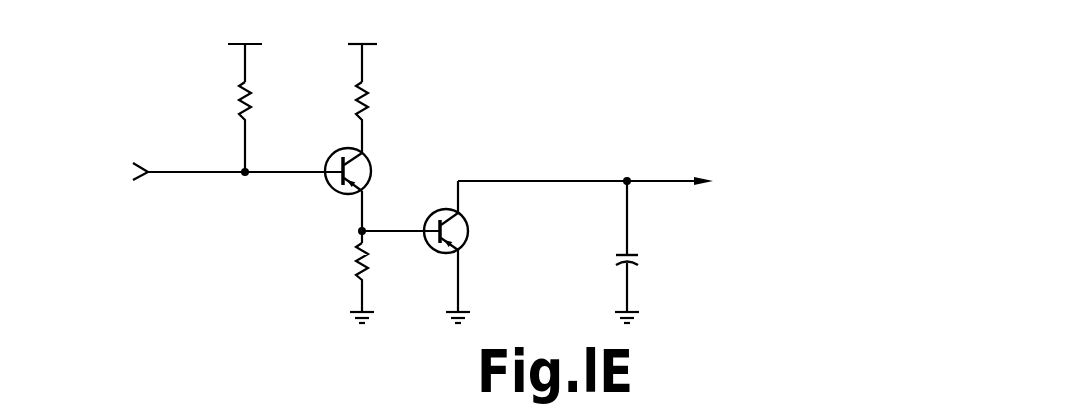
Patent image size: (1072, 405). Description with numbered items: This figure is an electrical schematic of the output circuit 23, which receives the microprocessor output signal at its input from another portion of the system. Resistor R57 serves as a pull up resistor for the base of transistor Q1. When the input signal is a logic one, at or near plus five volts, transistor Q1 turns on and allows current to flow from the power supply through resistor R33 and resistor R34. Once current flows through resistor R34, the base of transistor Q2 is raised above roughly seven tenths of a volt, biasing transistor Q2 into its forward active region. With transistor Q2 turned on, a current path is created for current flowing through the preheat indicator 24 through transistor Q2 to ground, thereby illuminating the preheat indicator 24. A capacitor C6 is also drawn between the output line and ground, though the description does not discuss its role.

The output circuit 23 is at (323, 217).
The preheat indicator 24 is at (760, 170).
The resistor R57 is at (263, 102).
The resistor R33 is at (368, 108).
The resistor R34 is at (368, 268).
The transistor Q1 is at (371, 178).
The transistor Q2 is at (468, 226).
The capacitor C6 is at (635, 264).